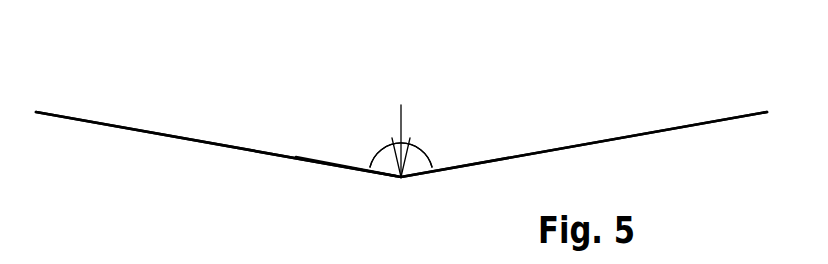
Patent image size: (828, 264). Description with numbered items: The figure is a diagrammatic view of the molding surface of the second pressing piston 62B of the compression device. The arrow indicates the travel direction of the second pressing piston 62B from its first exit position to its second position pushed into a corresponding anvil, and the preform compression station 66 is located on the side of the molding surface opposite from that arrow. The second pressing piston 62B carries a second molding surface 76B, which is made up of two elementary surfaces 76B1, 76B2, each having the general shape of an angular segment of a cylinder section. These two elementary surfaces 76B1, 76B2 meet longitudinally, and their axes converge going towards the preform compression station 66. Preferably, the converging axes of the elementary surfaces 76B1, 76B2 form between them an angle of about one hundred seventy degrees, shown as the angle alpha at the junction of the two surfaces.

The second pressing piston 62B is at (197, 73).
The second molding surface 76B is at (296, 157).
The elementary surface 76B1 is at (165, 137).
The elementary surface 76B2 is at (653, 132).
The preform compression station 66 is at (401, 161).